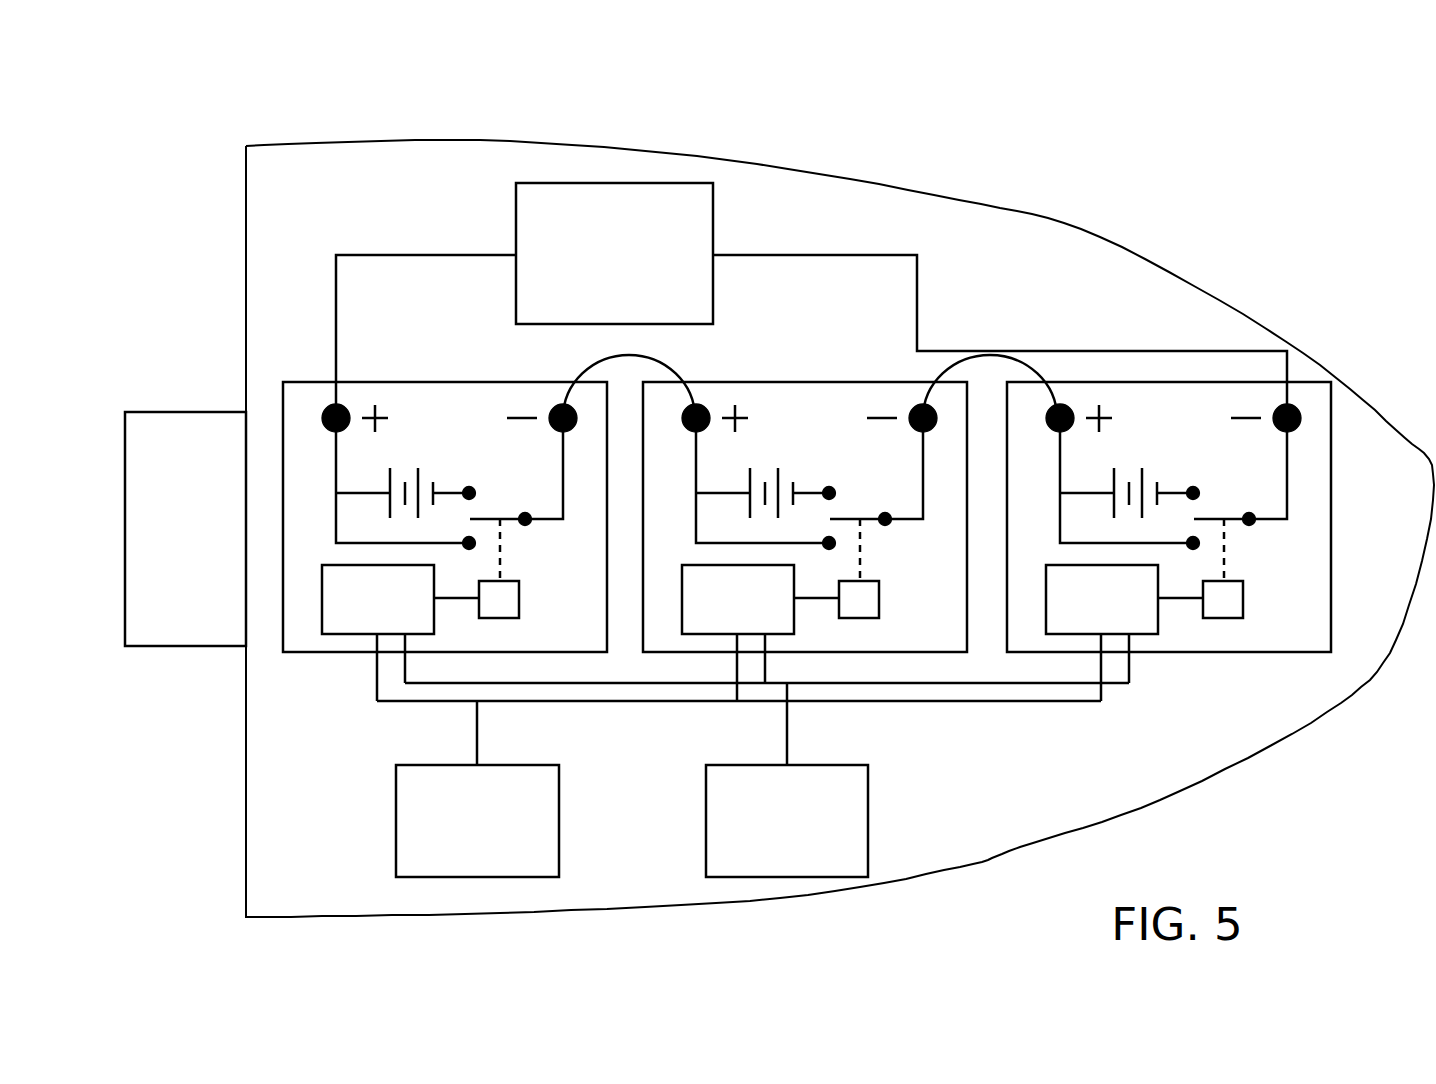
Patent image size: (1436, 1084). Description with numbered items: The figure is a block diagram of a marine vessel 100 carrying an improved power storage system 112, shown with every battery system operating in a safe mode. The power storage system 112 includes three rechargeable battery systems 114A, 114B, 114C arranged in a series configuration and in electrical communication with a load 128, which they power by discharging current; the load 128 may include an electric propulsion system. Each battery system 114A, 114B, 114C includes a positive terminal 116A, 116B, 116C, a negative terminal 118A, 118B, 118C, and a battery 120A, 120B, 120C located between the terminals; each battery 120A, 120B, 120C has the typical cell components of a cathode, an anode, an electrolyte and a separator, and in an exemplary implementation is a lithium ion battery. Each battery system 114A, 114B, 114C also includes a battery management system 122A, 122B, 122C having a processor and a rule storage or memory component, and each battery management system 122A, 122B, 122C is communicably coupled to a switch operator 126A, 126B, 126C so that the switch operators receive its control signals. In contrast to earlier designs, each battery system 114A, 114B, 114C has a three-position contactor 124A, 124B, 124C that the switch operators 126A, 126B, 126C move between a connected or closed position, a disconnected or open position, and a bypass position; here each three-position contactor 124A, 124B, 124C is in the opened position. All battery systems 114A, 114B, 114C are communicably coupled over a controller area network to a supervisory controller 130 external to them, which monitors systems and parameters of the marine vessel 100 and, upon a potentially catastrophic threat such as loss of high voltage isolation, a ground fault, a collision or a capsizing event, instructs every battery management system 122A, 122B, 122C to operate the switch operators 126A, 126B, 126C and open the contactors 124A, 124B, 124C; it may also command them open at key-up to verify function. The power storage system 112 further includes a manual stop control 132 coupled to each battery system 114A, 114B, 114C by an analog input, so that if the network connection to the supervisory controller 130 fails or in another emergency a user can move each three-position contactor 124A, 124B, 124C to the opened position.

The marine vessel 100 is at (197, 137).
The power storage system 112 is at (1002, 322).
The rechargeable battery system 114A is at (450, 653).
The rechargeable battery system 114B is at (805, 561).
The rechargeable battery system 114C is at (1169, 561).
The positive terminal 116A is at (382, 412).
The positive terminal 116B is at (740, 386).
The positive terminal 116C is at (1105, 371).
The negative terminal 118A is at (533, 410).
The negative terminal 118B is at (882, 386).
The negative terminal 118C is at (1239, 371).
The battery 120A is at (429, 468).
The battery 120B is at (774, 478).
The battery 120C is at (1138, 478).
The battery management system 122A is at (360, 635).
The battery management system 122B is at (701, 659).
The battery management system 122C is at (1063, 657).
The three-position contactor 124A is at (503, 517).
The three-position contactor 124B is at (876, 499).
The three-position contactor 124C is at (1240, 499).
The switch operator 126A is at (519, 596).
The switch operator 126B is at (873, 613).
The switch operator 126C is at (1237, 613).
The load 128 is at (694, 241).
The supervisory controller 130 is at (503, 783).
The manual stop control 132 is at (843, 792).